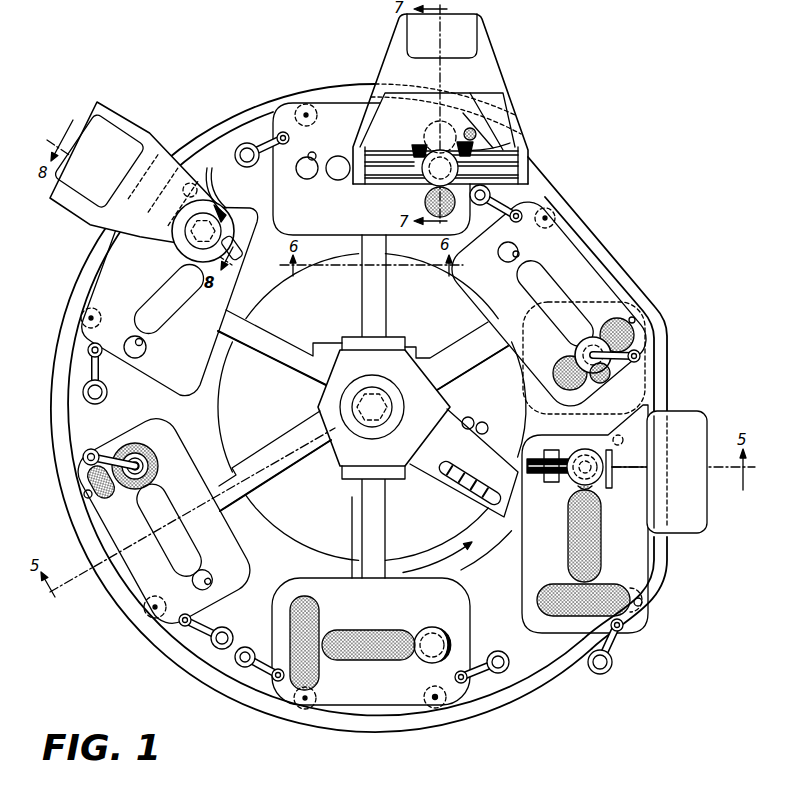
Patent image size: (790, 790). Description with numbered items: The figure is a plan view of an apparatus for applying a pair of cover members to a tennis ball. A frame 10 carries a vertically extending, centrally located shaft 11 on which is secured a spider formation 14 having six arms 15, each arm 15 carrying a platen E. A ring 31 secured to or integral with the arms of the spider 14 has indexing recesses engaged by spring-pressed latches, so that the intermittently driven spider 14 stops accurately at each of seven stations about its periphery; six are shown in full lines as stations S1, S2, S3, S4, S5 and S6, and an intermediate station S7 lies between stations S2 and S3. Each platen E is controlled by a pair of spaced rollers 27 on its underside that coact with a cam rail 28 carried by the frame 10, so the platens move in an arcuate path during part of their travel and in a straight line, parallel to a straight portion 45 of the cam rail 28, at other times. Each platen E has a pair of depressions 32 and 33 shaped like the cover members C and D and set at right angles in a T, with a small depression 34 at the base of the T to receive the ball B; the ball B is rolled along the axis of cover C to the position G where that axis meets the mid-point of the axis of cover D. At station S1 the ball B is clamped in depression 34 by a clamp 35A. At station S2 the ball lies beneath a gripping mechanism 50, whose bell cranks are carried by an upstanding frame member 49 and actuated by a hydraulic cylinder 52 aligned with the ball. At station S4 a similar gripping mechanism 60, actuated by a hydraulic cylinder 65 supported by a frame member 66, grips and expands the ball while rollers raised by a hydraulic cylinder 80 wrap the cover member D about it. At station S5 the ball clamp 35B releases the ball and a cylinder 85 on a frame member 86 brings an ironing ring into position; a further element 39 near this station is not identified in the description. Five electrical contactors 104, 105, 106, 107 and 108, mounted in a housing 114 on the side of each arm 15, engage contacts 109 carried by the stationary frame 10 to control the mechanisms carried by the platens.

The frame 10 is at (520, 690).
The cam rail 28 is at (362, 728).
The straight portion of cam rail 45 is at (663, 583).
The upstanding frame member 49 is at (695, 430).
The gripping mechanism 50 is at (553, 482).
The cylinder 52 is at (612, 470).
The gripping mechanism 60 is at (526, 154).
The hydraulic cylinder 65 is at (423, 151).
The frame member 66 is at (497, 77).
The hydraulic cylinder 80 is at (186, 251).
The cylinder 85 is at (194, 237).
The frame member 86 is at (90, 214).
The hook 39 is at (232, 262).
The shaft 11 is at (372, 386).
The spider formation 14 is at (316, 407).
The arms 15 is at (293, 367).
The rollers 27 is at (96, 310).
The ring 31 is at (482, 565).
The depression 32 is at (338, 181).
The depression 33 is at (160, 463).
The small depression 34 is at (312, 158).
The clamp 35A is at (248, 143).
The ball clamp 35B is at (236, 219).
The electrical contactor 104 is at (441, 482).
The electrical contactor 105 is at (450, 490).
The electrical contactor 106 is at (465, 490).
The electrical contactor 107 is at (480, 500).
The electrical contactor 108 is at (492, 516).
The contacts 109 is at (489, 432).
The housing 114 is at (462, 465).
The station S1 is at (452, 604).
The station S2 is at (528, 633).
The station S3 is at (640, 367).
The station S4 is at (337, 228).
The station S5 is at (263, 300).
The station S6 is at (200, 437).
The intermediate station S7 is at (610, 303).
The ball B is at (575, 355).
The cover member C is at (594, 332).
The cover member D is at (424, 200).
The platen E is at (390, 593).
The position G is at (304, 642).